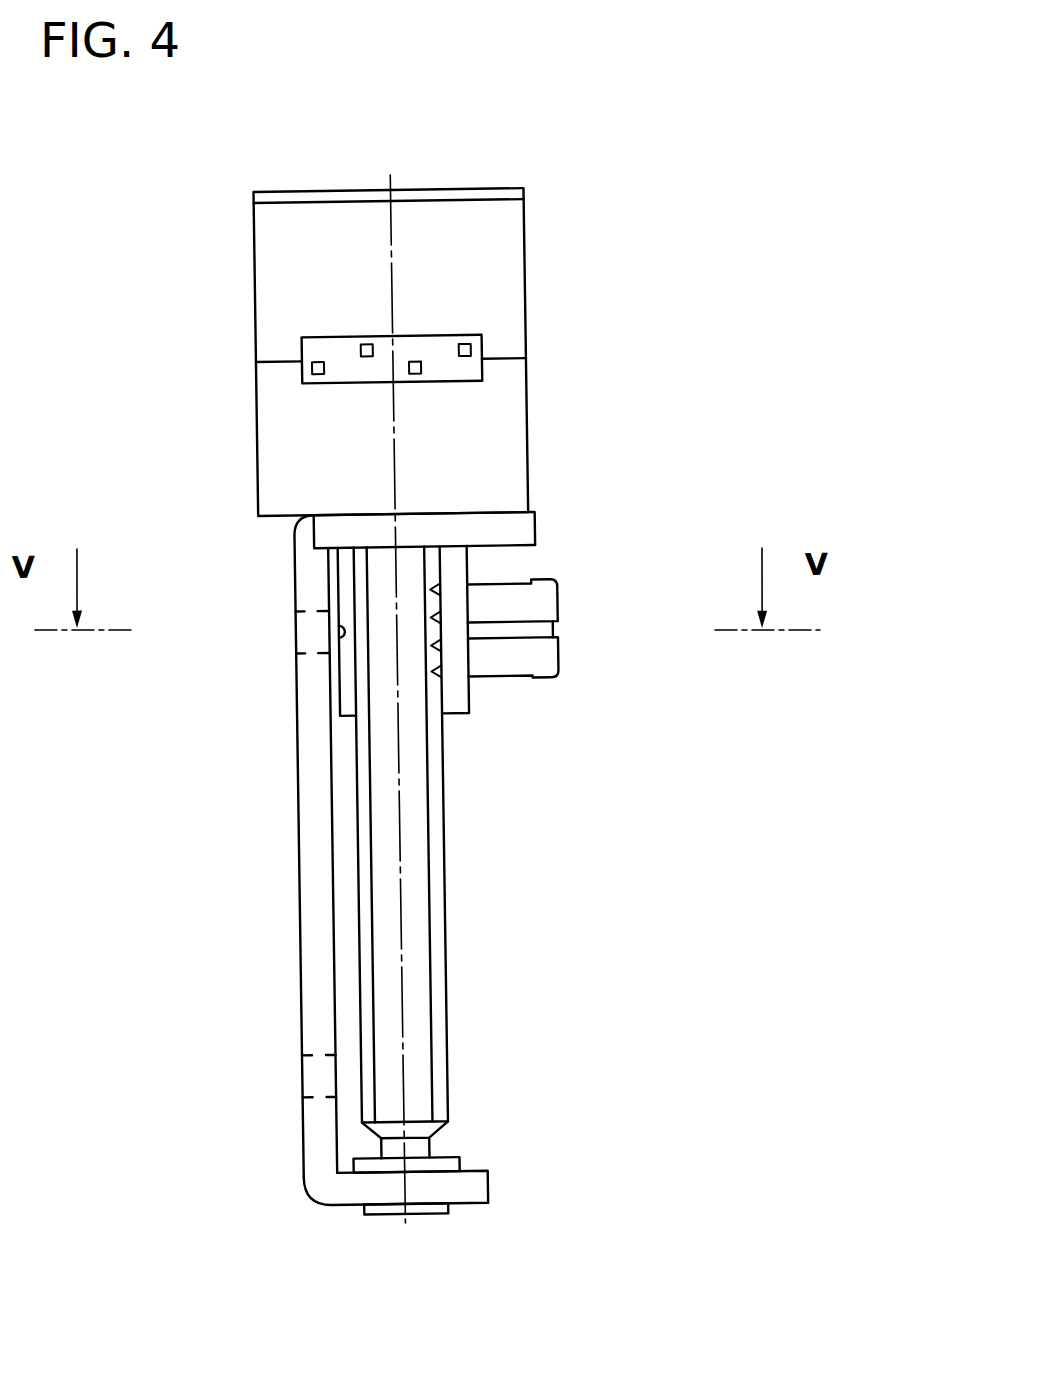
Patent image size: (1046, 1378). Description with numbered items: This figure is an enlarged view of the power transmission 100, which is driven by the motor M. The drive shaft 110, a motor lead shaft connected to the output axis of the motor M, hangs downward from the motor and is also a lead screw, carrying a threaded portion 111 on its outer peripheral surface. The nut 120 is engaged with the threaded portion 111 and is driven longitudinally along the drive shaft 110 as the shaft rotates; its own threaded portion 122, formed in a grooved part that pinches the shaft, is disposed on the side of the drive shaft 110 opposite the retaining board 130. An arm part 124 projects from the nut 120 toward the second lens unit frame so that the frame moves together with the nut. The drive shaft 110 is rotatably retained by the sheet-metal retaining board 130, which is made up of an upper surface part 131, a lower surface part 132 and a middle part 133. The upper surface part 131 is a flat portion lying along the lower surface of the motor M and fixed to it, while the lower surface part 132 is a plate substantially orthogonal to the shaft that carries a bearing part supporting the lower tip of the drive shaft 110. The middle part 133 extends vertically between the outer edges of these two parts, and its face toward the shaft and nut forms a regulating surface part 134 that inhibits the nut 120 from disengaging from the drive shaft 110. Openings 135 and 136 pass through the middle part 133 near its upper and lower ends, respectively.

The power transmission 100 is at (775, 858).
The motor M is at (508, 288).
The drive shaft 110 is at (408, 918).
The threaded portion 111 is at (433, 994).
The nut 120 is at (460, 571).
The threaded portion 122 is at (434, 670).
The arm part 124 is at (559, 658).
The retaining board 130 is at (160, 1125).
The upper surface part 131 is at (324, 536).
The lower surface part 132 is at (319, 1193).
The middle part 133 is at (307, 829).
The regulating surface part 134 is at (341, 872).
The opening 135 is at (300, 651).
The opening 136 is at (302, 1054).